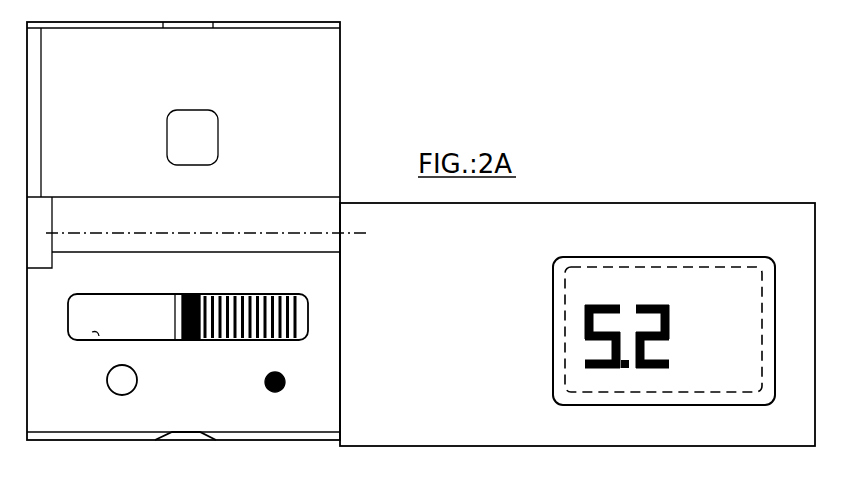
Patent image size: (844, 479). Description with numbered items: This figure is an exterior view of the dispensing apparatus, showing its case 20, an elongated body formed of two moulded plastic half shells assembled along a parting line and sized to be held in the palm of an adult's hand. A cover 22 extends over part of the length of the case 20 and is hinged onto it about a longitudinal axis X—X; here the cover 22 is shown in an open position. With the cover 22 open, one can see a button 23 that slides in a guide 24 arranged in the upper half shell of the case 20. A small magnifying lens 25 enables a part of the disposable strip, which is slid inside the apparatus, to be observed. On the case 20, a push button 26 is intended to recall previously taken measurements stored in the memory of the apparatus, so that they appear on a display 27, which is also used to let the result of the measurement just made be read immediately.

The case 20 is at (590, 204).
The cover 22 is at (322, 108).
The button 23 is at (297, 315).
The guide 24 is at (98, 332).
The magnifying lens 25 is at (120, 392).
The push button 26 is at (287, 383).
The display 27 is at (722, 265).